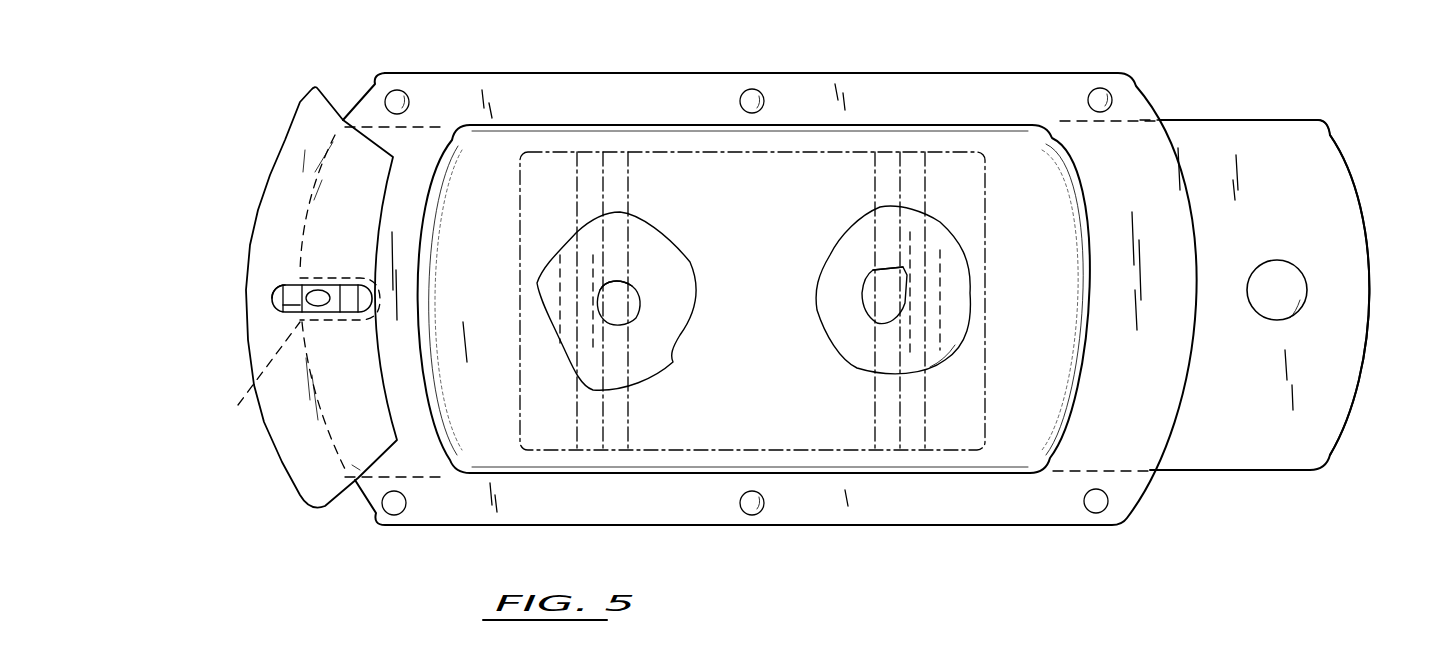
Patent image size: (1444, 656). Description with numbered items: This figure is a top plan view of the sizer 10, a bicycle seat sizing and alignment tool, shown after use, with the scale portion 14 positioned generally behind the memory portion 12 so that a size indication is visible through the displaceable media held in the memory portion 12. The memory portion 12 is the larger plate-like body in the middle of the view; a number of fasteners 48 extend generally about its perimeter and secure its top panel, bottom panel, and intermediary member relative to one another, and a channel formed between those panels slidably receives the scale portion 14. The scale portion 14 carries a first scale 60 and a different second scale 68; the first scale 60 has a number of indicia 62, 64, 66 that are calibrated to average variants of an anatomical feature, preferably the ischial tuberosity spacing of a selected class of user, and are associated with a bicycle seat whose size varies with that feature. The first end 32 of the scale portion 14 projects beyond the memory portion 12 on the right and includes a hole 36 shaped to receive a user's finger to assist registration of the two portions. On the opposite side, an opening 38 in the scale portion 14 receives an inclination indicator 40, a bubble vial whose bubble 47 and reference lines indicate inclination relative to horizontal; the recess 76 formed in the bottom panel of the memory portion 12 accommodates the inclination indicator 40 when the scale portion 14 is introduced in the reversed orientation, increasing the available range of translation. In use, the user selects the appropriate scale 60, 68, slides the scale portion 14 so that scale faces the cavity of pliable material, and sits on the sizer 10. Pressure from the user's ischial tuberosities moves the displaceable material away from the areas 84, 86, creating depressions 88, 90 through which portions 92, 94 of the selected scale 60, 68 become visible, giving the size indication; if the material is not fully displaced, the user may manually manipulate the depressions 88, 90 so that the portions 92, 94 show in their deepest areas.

The sizer 10 is at (1402, 52).
The memory portion 12 is at (1130, 87).
The scale portion 14 is at (1252, 126).
The first end 32 is at (1358, 222).
The hole 36 is at (1292, 270).
The opening 38 is at (275, 297).
The inclination indicator 40 is at (290, 312).
The bubble 47 is at (318, 292).
The fasteners 48 is at (397, 92).
The first scale 60 is at (754, 346).
The second scale 68 is at (955, 445).
The indicia 62 is at (620, 153).
The indicia 64 is at (590, 153).
The indicia 66 is at (543, 153).
The recess 76 is at (309, 297).
The area 84 is at (678, 392).
The area 86 is at (852, 385).
The depression 88 is at (652, 258).
The depression 90 is at (878, 285).
The portion of scale 92 is at (633, 294).
The portion of scale 94 is at (872, 306).